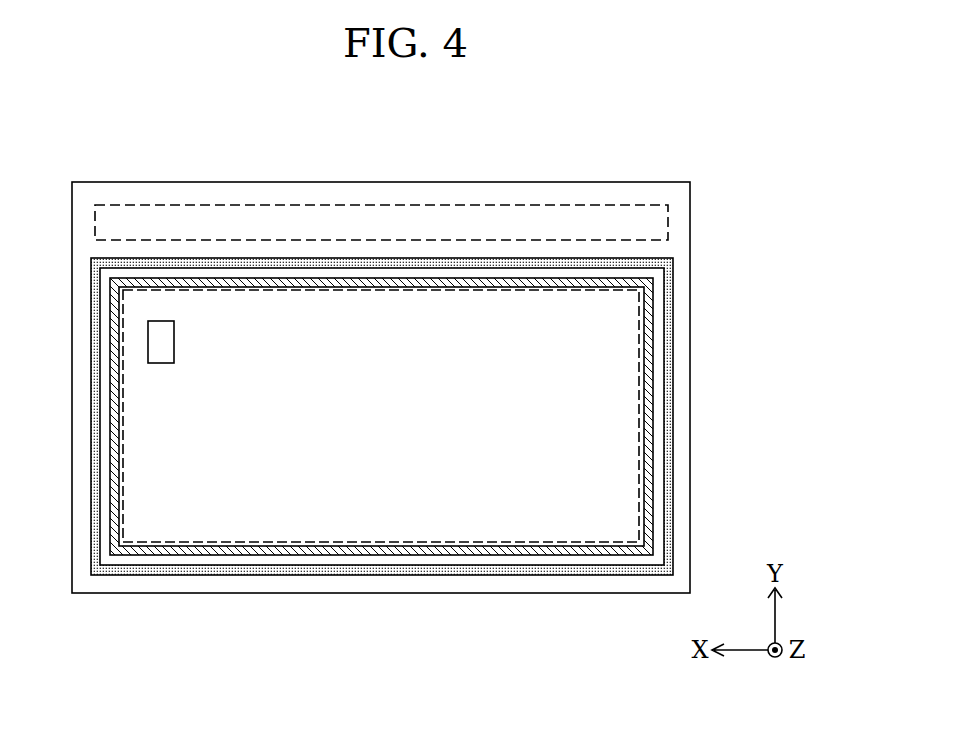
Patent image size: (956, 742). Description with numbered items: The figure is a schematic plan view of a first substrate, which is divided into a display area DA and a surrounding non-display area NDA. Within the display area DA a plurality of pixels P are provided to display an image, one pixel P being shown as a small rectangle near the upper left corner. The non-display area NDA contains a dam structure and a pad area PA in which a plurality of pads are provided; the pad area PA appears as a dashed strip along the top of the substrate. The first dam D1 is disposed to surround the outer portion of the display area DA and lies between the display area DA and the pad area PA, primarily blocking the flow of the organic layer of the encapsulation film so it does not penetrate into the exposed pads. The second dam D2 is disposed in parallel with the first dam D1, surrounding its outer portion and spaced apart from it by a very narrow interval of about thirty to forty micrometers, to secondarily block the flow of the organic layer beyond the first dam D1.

The pad area PA is at (669, 222).
The second dam D2 is at (669, 326).
The first dam D1 is at (648, 370).
The display area DA is at (638, 457).
The non-display area NDA is at (683, 512).
The pixel P is at (175, 342).